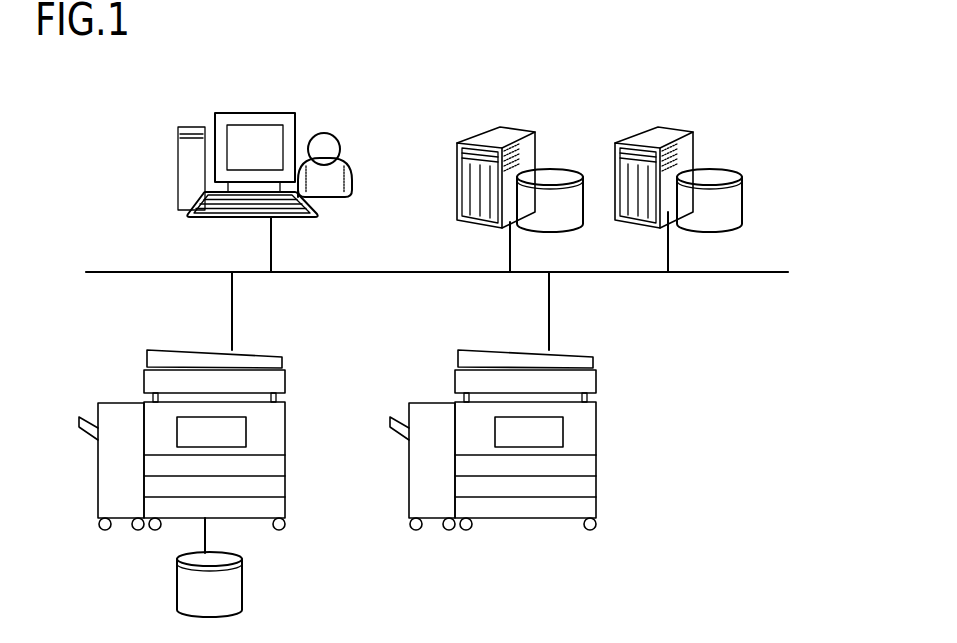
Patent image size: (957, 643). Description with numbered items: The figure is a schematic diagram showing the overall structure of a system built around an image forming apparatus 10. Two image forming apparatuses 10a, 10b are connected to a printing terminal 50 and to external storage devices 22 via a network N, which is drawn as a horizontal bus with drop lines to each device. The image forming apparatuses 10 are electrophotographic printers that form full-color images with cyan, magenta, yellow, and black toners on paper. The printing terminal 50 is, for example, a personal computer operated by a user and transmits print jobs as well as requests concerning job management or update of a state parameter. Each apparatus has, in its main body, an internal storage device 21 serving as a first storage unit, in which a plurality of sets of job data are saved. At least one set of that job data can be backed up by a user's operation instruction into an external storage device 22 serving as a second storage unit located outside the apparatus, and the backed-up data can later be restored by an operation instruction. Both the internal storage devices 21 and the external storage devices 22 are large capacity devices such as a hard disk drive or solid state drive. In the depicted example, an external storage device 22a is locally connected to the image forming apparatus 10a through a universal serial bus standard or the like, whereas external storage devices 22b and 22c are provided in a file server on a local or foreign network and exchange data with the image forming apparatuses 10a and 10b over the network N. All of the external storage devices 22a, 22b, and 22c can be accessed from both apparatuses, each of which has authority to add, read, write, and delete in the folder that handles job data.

The printing terminal 50 is at (235, 113).
The network N is at (758, 274).
The image forming apparatus 10 is at (389, 451).
The image forming apparatus 10a is at (286, 391).
The image forming apparatus 10b is at (598, 380).
The internal storage device 21 is at (370, 432).
The external storage device 22 is at (480, 355).
The external storage device 22a is at (243, 583).
The external storage device 22b is at (555, 167).
The external storage device 22c is at (722, 167).